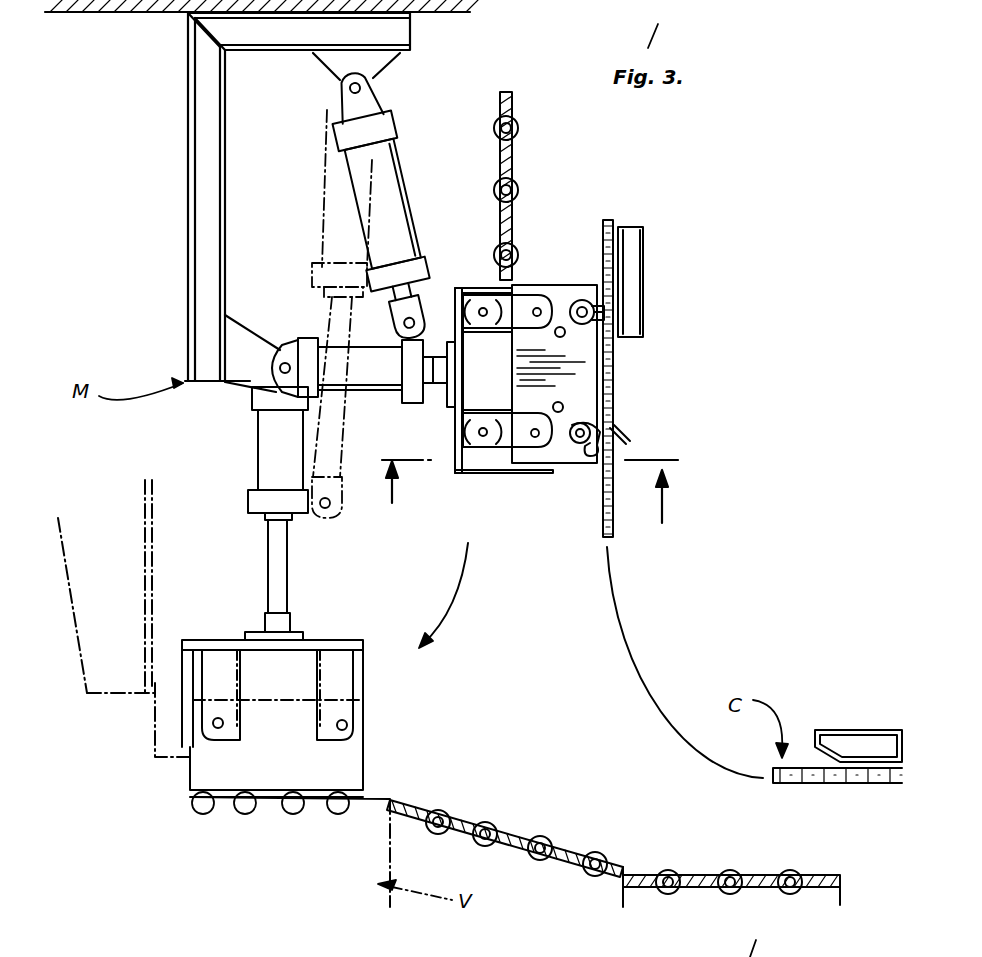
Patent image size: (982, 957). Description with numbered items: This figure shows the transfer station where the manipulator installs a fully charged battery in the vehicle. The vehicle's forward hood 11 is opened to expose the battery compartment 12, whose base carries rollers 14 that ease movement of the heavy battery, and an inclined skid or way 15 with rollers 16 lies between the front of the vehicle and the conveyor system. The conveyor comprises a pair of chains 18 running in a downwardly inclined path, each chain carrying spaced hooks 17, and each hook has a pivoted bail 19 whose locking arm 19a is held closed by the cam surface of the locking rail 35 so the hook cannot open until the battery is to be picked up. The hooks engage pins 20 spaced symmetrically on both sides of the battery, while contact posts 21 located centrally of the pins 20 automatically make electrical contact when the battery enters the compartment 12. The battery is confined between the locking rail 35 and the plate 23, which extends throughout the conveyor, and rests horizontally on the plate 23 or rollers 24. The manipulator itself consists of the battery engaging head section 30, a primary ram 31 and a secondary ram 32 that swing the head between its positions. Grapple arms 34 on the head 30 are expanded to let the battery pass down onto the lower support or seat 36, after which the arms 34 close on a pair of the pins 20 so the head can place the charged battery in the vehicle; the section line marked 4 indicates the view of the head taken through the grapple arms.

The forward hood 11 is at (143, 510).
The battery compartment 12 is at (158, 730).
The rollers 14 is at (247, 812).
The inclined skid or way 15 is at (462, 813).
The rollers 16 is at (537, 860).
The hooks 17 is at (583, 301).
The conveyor chains 18 is at (613, 525).
The pivoted bail 19 is at (588, 462).
The locking arm 19a is at (617, 318).
The pins 20 is at (537, 307).
The contact posts 21 is at (563, 404).
The plate 23 is at (512, 155).
The rollers 24 is at (515, 127).
The battery engaging head section 30 is at (452, 267).
The primary ram or actuator 31 is at (347, 177).
The secondary ram or actuator 32 is at (382, 400).
The grapple arms 34 is at (502, 423).
The locking rail 35 is at (633, 267).
The lower support or seat 36 is at (490, 473).
The section line 4- 4 is at (528, 501).